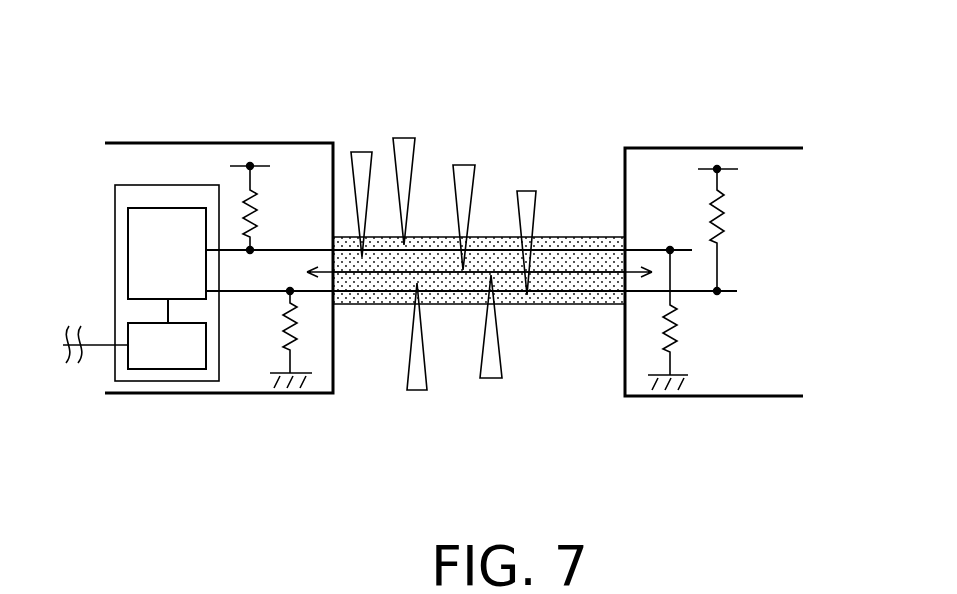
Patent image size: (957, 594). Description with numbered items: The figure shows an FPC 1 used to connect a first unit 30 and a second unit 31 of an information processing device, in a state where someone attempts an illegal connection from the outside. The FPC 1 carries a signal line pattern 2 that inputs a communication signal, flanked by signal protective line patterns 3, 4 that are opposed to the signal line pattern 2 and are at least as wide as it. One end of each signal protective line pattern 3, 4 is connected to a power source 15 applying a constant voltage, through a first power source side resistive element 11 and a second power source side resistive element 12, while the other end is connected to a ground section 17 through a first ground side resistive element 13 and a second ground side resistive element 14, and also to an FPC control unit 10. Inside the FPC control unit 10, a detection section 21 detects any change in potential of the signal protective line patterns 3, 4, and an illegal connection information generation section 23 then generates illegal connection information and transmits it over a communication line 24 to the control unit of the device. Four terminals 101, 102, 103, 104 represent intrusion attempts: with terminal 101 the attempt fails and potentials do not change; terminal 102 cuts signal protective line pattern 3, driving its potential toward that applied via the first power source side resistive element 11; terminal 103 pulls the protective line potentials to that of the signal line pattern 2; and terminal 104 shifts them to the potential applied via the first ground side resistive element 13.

The FPC 1 is at (464, 86).
The signal line pattern 2 is at (392, 272).
The signal protective line pattern 3 is at (570, 250).
The signal protective line pattern 4 is at (597, 292).
The FPC control unit 10 is at (193, 187).
The first power source side resistive element 11 is at (267, 212).
The second power source side resistive element 12 is at (740, 210).
The first ground side resistive element 13 is at (682, 332).
The second ground side resistive element 14 is at (305, 333).
The power source 15 is at (242, 158).
The ground section 17 is at (268, 390).
The detection section 21 is at (140, 207).
The illegal connection information generation section 23 is at (157, 381).
The communication line 24 is at (95, 345).
The first unit 30 is at (228, 383).
The second unit 31 is at (756, 378).
The terminal 101 is at (404, 177).
The terminal 102 is at (390, 273).
The terminal 103 is at (477, 273).
The terminal 104 is at (527, 229).